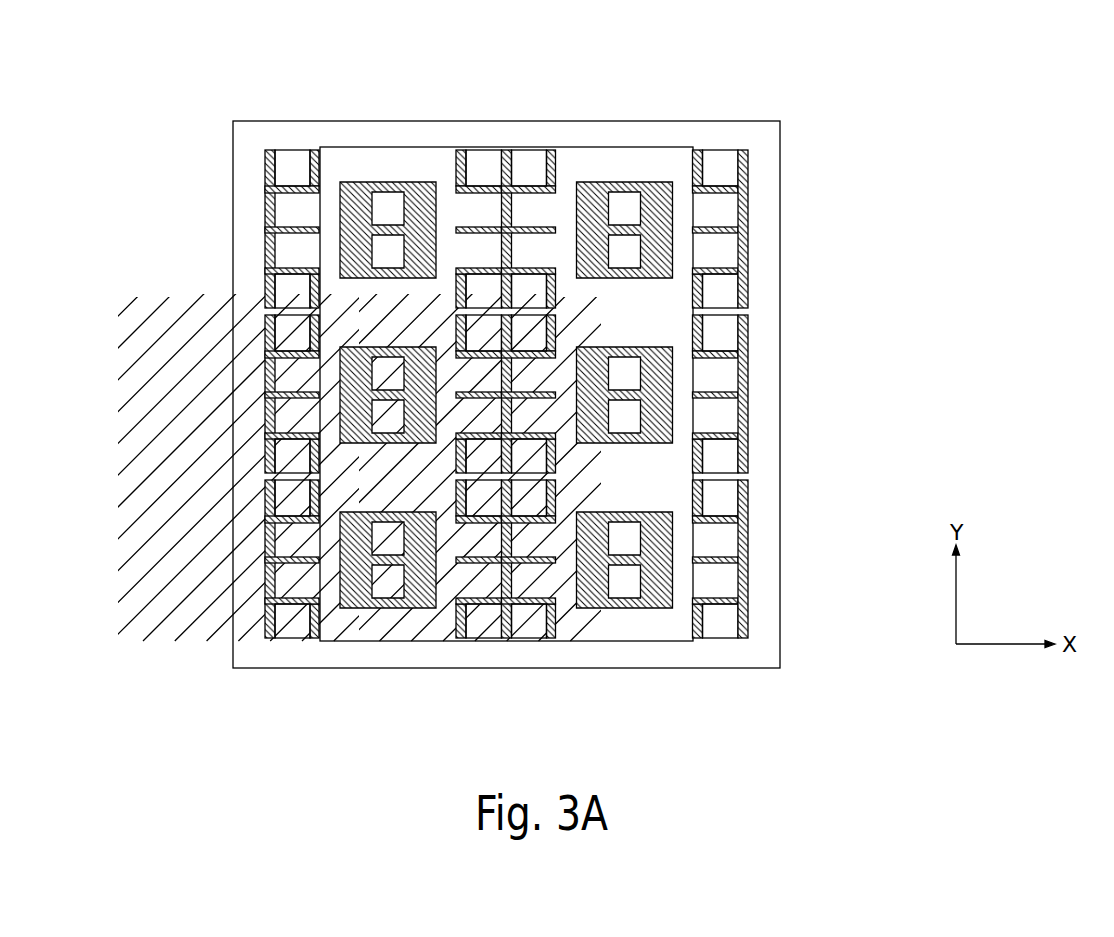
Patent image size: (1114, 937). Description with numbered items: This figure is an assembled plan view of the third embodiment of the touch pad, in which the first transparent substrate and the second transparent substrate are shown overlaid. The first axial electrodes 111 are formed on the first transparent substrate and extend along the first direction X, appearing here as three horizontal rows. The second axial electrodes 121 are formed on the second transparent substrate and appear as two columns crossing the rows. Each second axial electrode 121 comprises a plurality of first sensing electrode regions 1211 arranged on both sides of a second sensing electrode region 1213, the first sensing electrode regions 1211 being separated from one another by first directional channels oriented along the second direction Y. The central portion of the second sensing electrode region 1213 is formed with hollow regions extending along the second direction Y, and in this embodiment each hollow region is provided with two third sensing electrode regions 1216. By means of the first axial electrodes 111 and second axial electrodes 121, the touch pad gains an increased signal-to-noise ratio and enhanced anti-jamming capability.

The second axial electrode 121 is at (557, 391).
The first axial electrode 111 is at (857, 172).
The first sensing electrode region 1211 is at (298, 620).
The second sensing electrode region 1213 is at (427, 618).
The third sensing electrode region 1216 is at (625, 583).